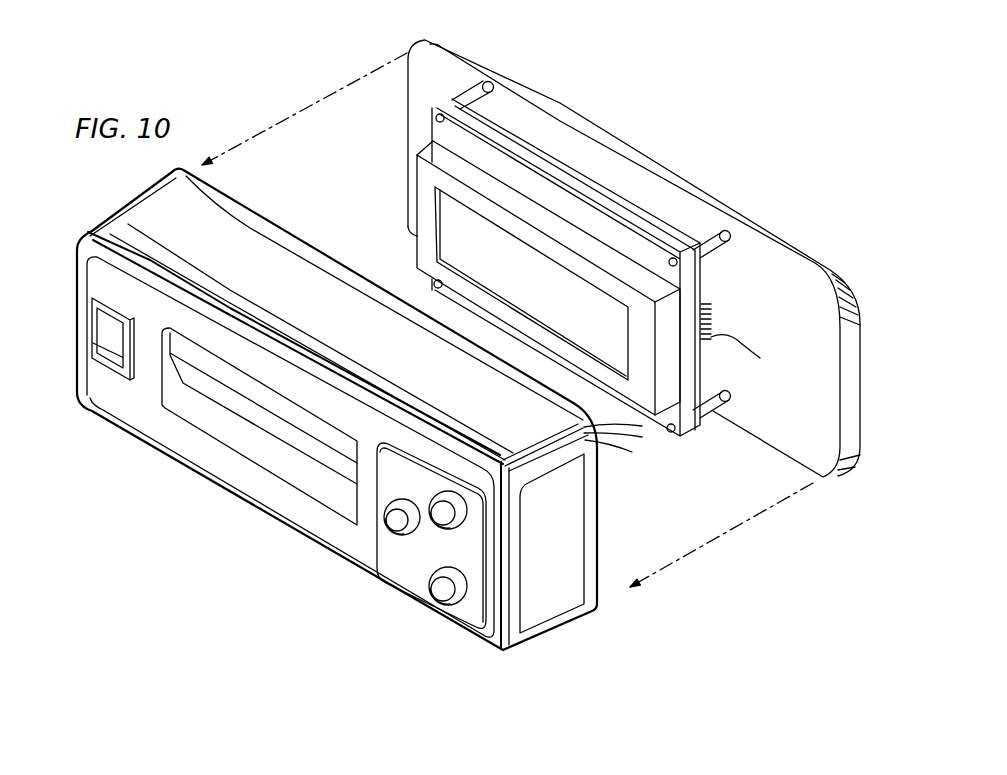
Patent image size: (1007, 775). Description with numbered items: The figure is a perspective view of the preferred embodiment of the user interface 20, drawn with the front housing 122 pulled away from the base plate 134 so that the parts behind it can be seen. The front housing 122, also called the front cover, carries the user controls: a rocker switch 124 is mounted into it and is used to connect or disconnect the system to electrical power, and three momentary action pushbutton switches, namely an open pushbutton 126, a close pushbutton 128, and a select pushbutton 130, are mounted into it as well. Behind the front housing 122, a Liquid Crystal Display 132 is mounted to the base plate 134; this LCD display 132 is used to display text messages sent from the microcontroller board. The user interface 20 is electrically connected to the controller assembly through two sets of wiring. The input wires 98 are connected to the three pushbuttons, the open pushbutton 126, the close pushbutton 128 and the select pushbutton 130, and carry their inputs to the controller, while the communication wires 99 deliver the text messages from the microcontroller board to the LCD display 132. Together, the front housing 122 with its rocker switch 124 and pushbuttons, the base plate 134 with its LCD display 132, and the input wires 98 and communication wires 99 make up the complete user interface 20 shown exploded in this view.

The user interface 20 is at (771, 552).
The input wires 98 is at (610, 449).
The communication wires 99 is at (757, 362).
The front housing 122 is at (127, 207).
The rocker switch 124 is at (102, 332).
The open pushbutton 126 is at (446, 516).
The close pushbutton 128 is at (445, 592).
The select pushbutton 130 is at (395, 522).
The LCD display 132 is at (452, 248).
The base plate 134 is at (778, 268).